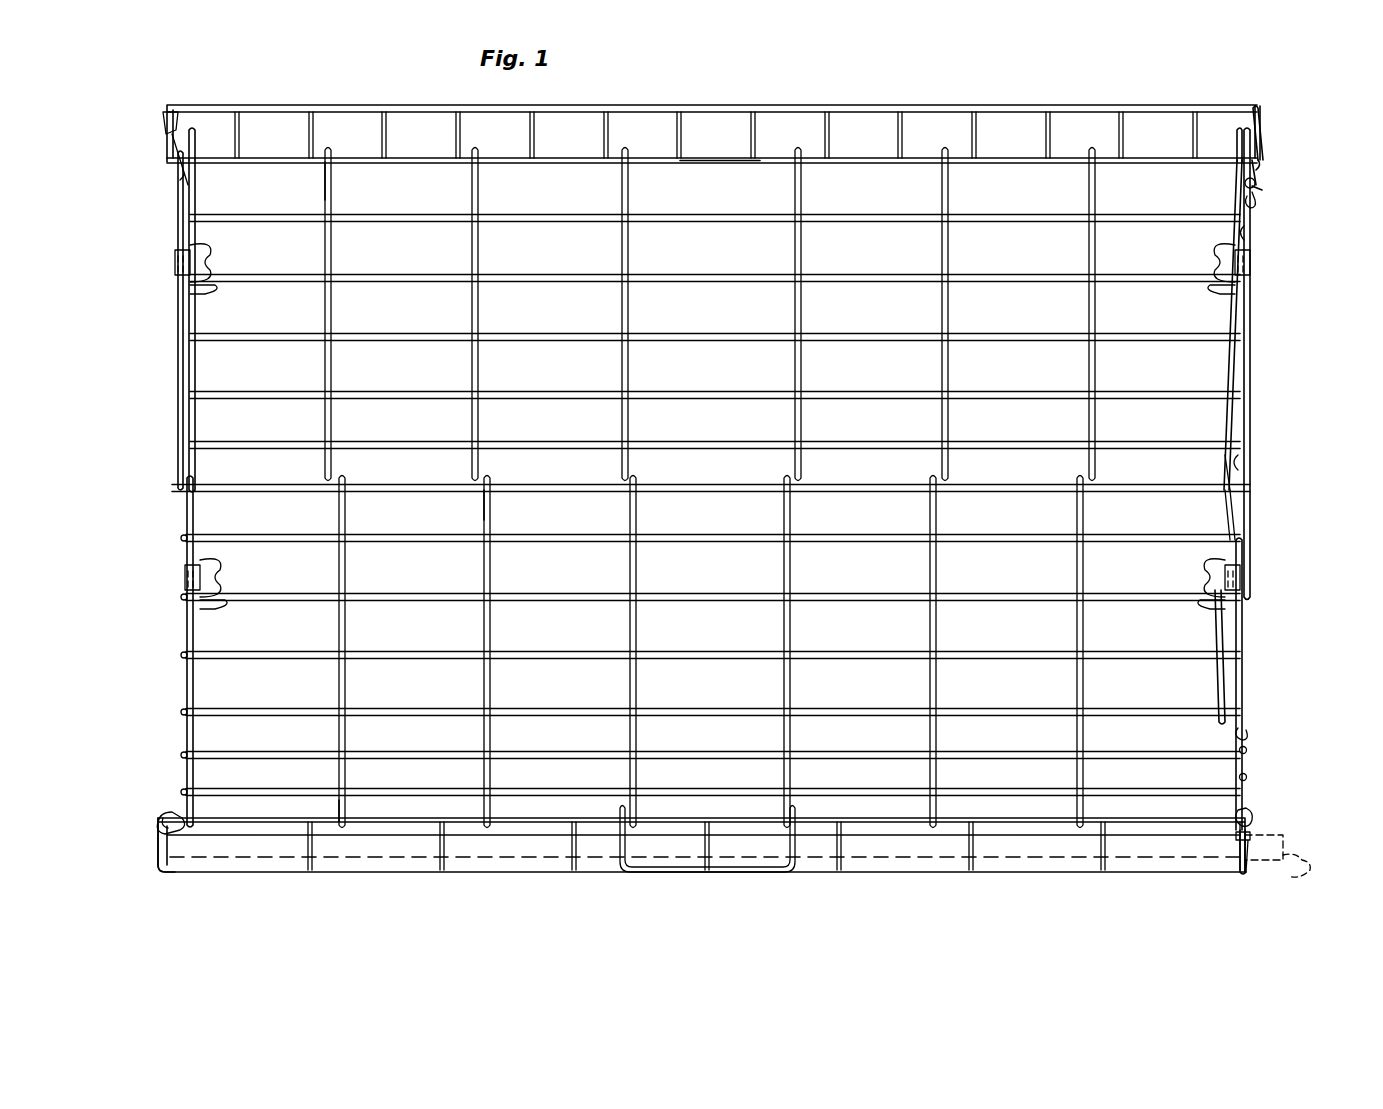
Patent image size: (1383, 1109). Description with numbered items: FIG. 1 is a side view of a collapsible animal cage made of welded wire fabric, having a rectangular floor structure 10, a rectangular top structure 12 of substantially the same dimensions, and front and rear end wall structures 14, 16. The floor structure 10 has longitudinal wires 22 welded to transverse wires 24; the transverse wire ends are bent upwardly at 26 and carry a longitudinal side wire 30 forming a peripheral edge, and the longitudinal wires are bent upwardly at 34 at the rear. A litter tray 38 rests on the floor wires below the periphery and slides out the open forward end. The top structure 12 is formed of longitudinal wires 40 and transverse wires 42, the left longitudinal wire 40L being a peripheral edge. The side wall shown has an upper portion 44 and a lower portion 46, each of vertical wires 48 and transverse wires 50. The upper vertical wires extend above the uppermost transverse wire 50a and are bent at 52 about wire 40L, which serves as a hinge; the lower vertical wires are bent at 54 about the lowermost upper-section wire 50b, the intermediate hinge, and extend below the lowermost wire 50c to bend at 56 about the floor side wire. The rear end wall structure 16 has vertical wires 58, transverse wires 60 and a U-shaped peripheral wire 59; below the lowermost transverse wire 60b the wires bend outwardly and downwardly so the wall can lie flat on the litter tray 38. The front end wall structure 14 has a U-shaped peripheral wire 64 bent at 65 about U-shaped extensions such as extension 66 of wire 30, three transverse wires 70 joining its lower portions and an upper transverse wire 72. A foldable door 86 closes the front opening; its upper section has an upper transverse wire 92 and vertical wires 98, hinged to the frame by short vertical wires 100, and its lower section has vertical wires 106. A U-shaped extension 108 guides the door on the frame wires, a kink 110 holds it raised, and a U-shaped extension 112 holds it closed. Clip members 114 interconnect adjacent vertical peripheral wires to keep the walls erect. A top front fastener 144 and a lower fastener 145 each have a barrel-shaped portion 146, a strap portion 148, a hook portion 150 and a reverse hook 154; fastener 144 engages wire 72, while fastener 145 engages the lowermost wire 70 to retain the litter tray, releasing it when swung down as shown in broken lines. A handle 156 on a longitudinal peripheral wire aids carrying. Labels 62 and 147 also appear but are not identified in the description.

The floor structure 10 is at (549, 889).
The top structure 12 is at (802, 84).
The front end wall structure 14 is at (1313, 411).
The rear end wall structure 16 is at (135, 553).
The longitudinally extending wires 22 is at (1035, 870).
The transversely extending wires 24 is at (1110, 855).
The upwardly bent left hand ends 26 is at (430, 845).
The right longitudinally extending side wire 30 is at (1030, 818).
The upwardly bent rear end portions 34 is at (165, 850).
The litter tray 38 is at (905, 835).
The longitudinally extending wires 40 is at (996, 105).
The left longitudinal wire 40L is at (722, 165).
The transversely extending wires 42 is at (608, 128).
The upper portion 44 is at (1190, 315).
The lower portion 46 is at (1175, 635).
The vertically extending wires 48 is at (805, 248).
The transversely extending wires 50 is at (670, 330).
The uppermost transverse wire 50a is at (968, 212).
The lowermost transverse wire of upper section 50b is at (975, 484).
The lowermost transverse wire 50c is at (965, 788).
The bend 52 is at (330, 150).
The bend 54 is at (490, 478).
The bend 56 is at (340, 870).
The intermediate vertically extending wires 58 is at (205, 140).
The U-shaped wire 59 is at (196, 377).
The transversely extending wires 60 is at (182, 655).
The lowermost transverse wire 60b is at (184, 790).
The lower left hook 62 is at (160, 822).
The U-shaped peripheral wire 64 is at (1244, 683).
The bends 65 is at (1255, 818).
The U-shaped extension 66 is at (1255, 835).
The transversely extending wires 70 is at (1247, 777).
The upper transverse wire 72 is at (1257, 180).
The foldable door 86 is at (1203, 511).
The upper transverse wire 92 is at (1243, 200).
The vertically extending wires 98 is at (1232, 372).
The short vertical wires 100 is at (1236, 172).
The vertically extending wires 106 is at (1215, 680).
The U-shaped extension 108 is at (1246, 736).
The kink 110 is at (1248, 233).
The U-shaped extension 112 is at (1250, 460).
The clip members 114 is at (174, 262).
The top front clip 144 is at (1271, 152).
The third fastener 145 is at (1262, 852).
The barrel-shaped portion 146 is at (1258, 116).
The upper left latch 147 is at (156, 145).
The intermediate strap portion 148 is at (1262, 140).
The hook portion 150 is at (1302, 874).
The reversely extending hook 154 is at (1264, 188).
The handle 156 is at (735, 865).